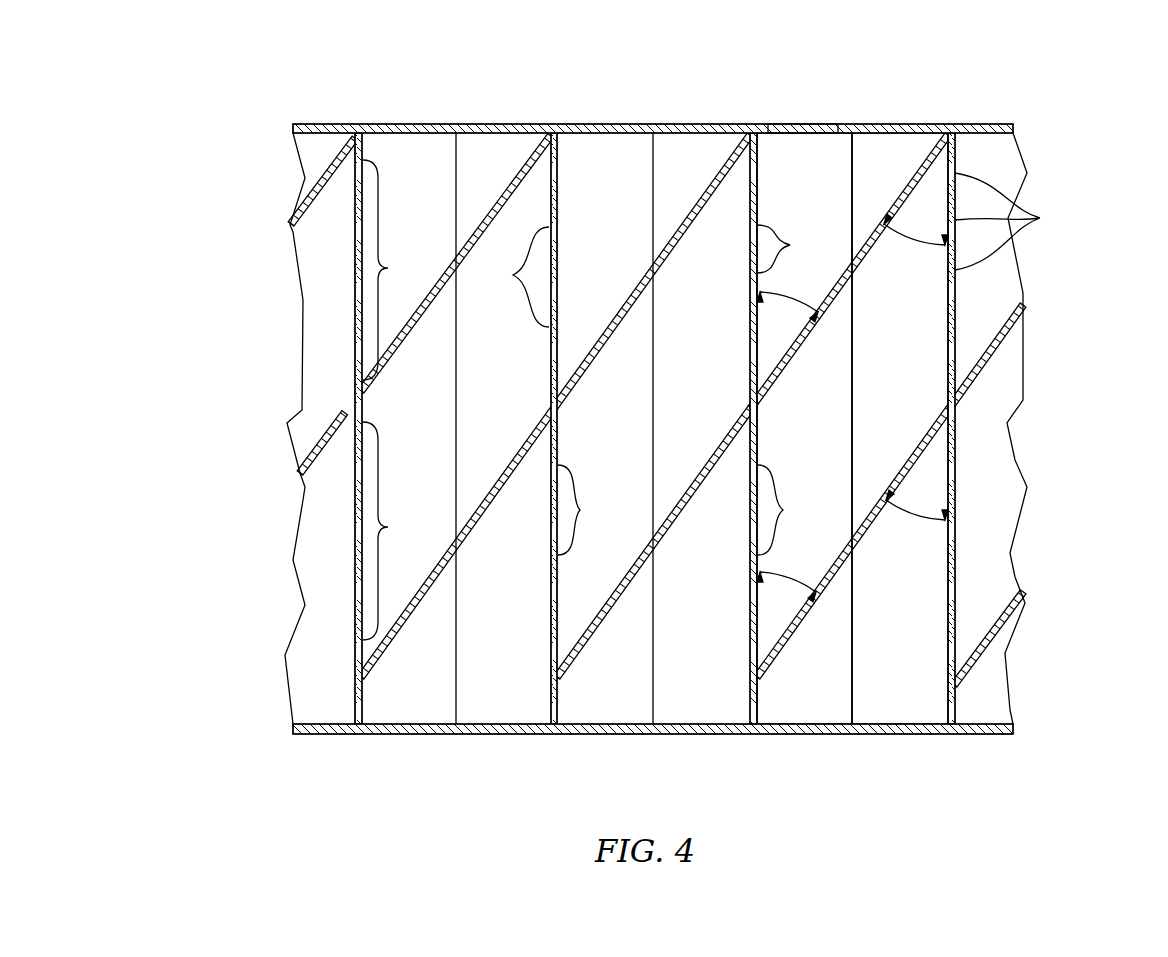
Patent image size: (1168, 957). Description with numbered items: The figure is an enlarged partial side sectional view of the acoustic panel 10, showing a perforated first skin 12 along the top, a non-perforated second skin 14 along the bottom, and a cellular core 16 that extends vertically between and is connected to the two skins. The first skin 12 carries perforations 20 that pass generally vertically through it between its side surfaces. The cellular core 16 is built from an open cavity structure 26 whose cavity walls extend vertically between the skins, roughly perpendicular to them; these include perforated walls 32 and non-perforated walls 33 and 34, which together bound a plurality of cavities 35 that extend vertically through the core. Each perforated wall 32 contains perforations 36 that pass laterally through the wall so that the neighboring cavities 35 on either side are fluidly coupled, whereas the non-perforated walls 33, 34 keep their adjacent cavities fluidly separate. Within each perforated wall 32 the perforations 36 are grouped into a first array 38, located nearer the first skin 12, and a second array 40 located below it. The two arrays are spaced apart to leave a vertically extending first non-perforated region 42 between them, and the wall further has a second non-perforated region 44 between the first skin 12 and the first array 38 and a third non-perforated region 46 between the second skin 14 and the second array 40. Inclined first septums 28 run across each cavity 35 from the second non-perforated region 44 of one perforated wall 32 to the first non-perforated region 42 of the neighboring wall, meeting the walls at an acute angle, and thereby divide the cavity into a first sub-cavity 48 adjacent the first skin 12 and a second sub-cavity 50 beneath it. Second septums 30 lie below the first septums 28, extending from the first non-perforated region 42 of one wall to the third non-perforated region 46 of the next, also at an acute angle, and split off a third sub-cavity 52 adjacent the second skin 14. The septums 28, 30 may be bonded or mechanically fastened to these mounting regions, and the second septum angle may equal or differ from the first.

The acoustic panel 10 is at (1072, 101).
The first skin 12 is at (288, 124).
The second skin 14 is at (287, 735).
The cellular core 16 is at (250, 656).
The perforations 20 is at (838, 124).
The open cavity structure 26 is at (1010, 482).
The first septums 28 is at (397, 353).
The second septums 30 is at (715, 458).
The perforated walls 32 is at (956, 560).
The non-perforated walls 33 is at (897, 698).
The non-perforated walls 34 is at (805, 700).
The cavities 35 is at (421, 712).
The perforations 36 is at (779, 364).
The first array 38 is at (389, 270).
The second array 40 is at (389, 531).
The first non-perforated region 42 is at (348, 405).
The second non-perforated region 44 is at (347, 155).
The third non-perforated region 46 is at (348, 712).
The first sub-cavity 48 is at (469, 185).
The second sub-cavity 50 is at (469, 365).
The third sub-cavity 52 is at (488, 657).